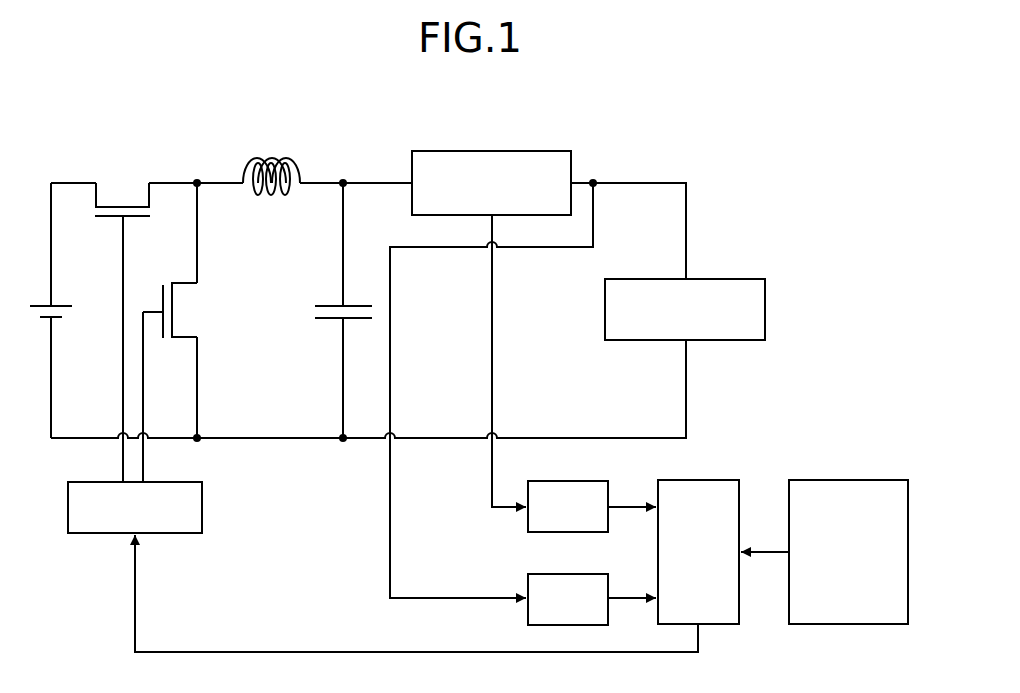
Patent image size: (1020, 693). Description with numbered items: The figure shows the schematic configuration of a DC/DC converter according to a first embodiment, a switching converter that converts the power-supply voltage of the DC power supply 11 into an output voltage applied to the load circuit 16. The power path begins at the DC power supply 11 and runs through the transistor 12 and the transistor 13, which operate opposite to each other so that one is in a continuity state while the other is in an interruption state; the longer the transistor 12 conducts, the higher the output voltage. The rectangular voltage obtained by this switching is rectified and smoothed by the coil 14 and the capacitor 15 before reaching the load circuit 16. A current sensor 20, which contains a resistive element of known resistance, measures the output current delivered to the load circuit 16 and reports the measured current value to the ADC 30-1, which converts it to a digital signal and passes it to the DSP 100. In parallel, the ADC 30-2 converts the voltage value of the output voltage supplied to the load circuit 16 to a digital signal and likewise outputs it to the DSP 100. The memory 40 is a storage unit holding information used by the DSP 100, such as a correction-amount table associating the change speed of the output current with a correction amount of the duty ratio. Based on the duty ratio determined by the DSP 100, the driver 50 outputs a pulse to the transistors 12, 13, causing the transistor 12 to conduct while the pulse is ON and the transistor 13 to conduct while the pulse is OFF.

The DC power supply 11 is at (66, 297).
The transistor 12 is at (124, 190).
The transistor 13 is at (192, 303).
The coil 14 is at (281, 151).
The capacitor 15 is at (328, 295).
The load circuit 16 is at (725, 278).
The current sensor 20 is at (497, 150).
The Analogue Digital Converter (ADC) 30-1 is at (574, 460).
The ADC 30-2 is at (574, 553).
The memory 40 is at (851, 480).
The driver 50 is at (171, 462).
The Digital Signal Processor (DSP) 100 is at (698, 480).